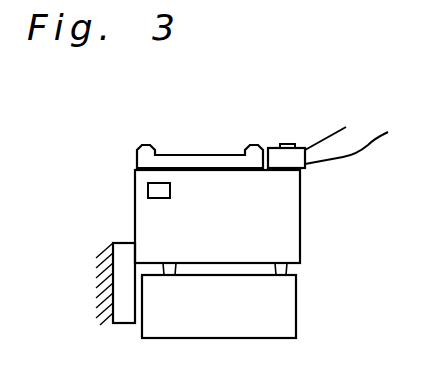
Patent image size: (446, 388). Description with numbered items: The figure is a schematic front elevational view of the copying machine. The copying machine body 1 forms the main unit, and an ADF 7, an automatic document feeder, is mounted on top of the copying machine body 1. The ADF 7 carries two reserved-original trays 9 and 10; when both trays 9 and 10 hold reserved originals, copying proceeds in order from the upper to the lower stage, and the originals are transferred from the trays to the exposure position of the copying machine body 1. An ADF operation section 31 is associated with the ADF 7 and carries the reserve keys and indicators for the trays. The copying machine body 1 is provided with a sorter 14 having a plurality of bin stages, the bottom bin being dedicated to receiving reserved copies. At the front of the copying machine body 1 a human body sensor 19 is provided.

The copying machine body 1 is at (312, 241).
The ADF 7 is at (199, 142).
The reserved-original tray 9 is at (333, 128).
The reserved-original tray 10 is at (360, 130).
The sorter 14 is at (105, 235).
The human body sensor 19 is at (138, 188).
The ADF operation section 31 is at (286, 145).